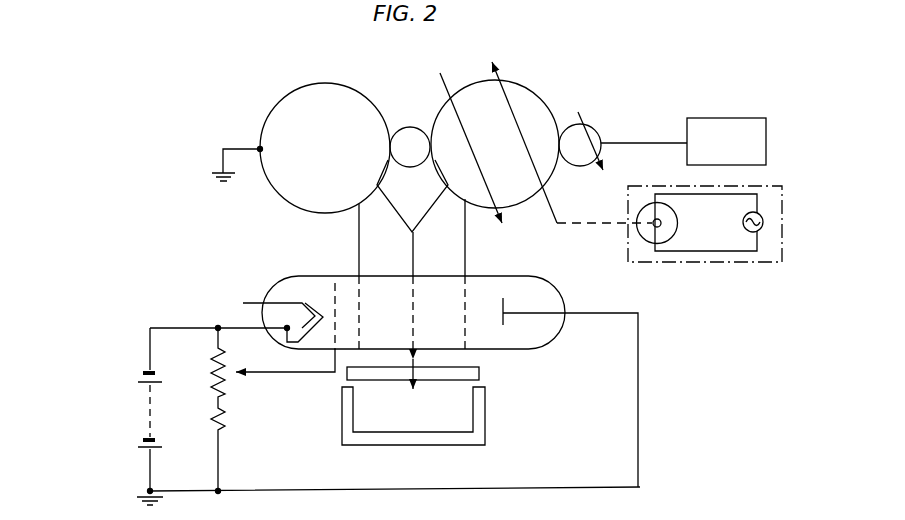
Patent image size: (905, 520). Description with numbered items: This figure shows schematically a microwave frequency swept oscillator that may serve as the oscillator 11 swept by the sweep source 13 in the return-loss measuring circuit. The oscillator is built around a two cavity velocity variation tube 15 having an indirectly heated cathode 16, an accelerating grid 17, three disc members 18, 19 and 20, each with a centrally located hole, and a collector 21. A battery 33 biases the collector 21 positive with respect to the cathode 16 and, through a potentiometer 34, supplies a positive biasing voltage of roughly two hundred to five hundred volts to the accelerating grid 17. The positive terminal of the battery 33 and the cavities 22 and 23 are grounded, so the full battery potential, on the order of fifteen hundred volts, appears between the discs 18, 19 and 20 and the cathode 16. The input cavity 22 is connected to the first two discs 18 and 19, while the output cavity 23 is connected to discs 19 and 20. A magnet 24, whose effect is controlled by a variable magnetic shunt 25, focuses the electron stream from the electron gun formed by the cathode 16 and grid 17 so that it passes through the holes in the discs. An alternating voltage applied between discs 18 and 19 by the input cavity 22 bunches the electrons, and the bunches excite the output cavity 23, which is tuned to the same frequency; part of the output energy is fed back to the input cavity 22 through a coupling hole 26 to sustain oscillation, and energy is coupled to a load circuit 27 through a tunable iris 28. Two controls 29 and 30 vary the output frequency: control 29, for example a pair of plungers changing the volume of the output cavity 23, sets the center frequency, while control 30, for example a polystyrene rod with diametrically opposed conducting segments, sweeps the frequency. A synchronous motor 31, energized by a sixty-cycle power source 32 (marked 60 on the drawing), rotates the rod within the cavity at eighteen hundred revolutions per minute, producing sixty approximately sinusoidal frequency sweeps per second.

The oscillator 11 is at (242, 224).
The sweep source 13 is at (710, 211).
The two cavity velocity variation tube 15 is at (296, 277).
The indirectly heated cathode 16 is at (293, 349).
The accelerating grid 17 is at (330, 348).
The disc member 18 is at (357, 348).
The disc member 19 is at (411, 348).
The disc member 20 is at (468, 348).
The collector 21 is at (503, 325).
The input cavity 22 is at (272, 119).
The output cavity 23 is at (535, 101).
The magnet 24 is at (420, 438).
The variable magnetic shunt 25 is at (437, 375).
The coupling hole 26 is at (404, 127).
The load circuit 27 is at (737, 123).
The tunable iris 28 is at (593, 130).
The control 29 is at (473, 155).
The control 30 is at (509, 107).
The synchronous motor 31 is at (668, 218).
The 60-cycle power source 32 is at (747, 229).
The battery 33 is at (150, 406).
The potentiometer 34 is at (212, 364).
The 60 Hz frequency 60 is at (738, 207).